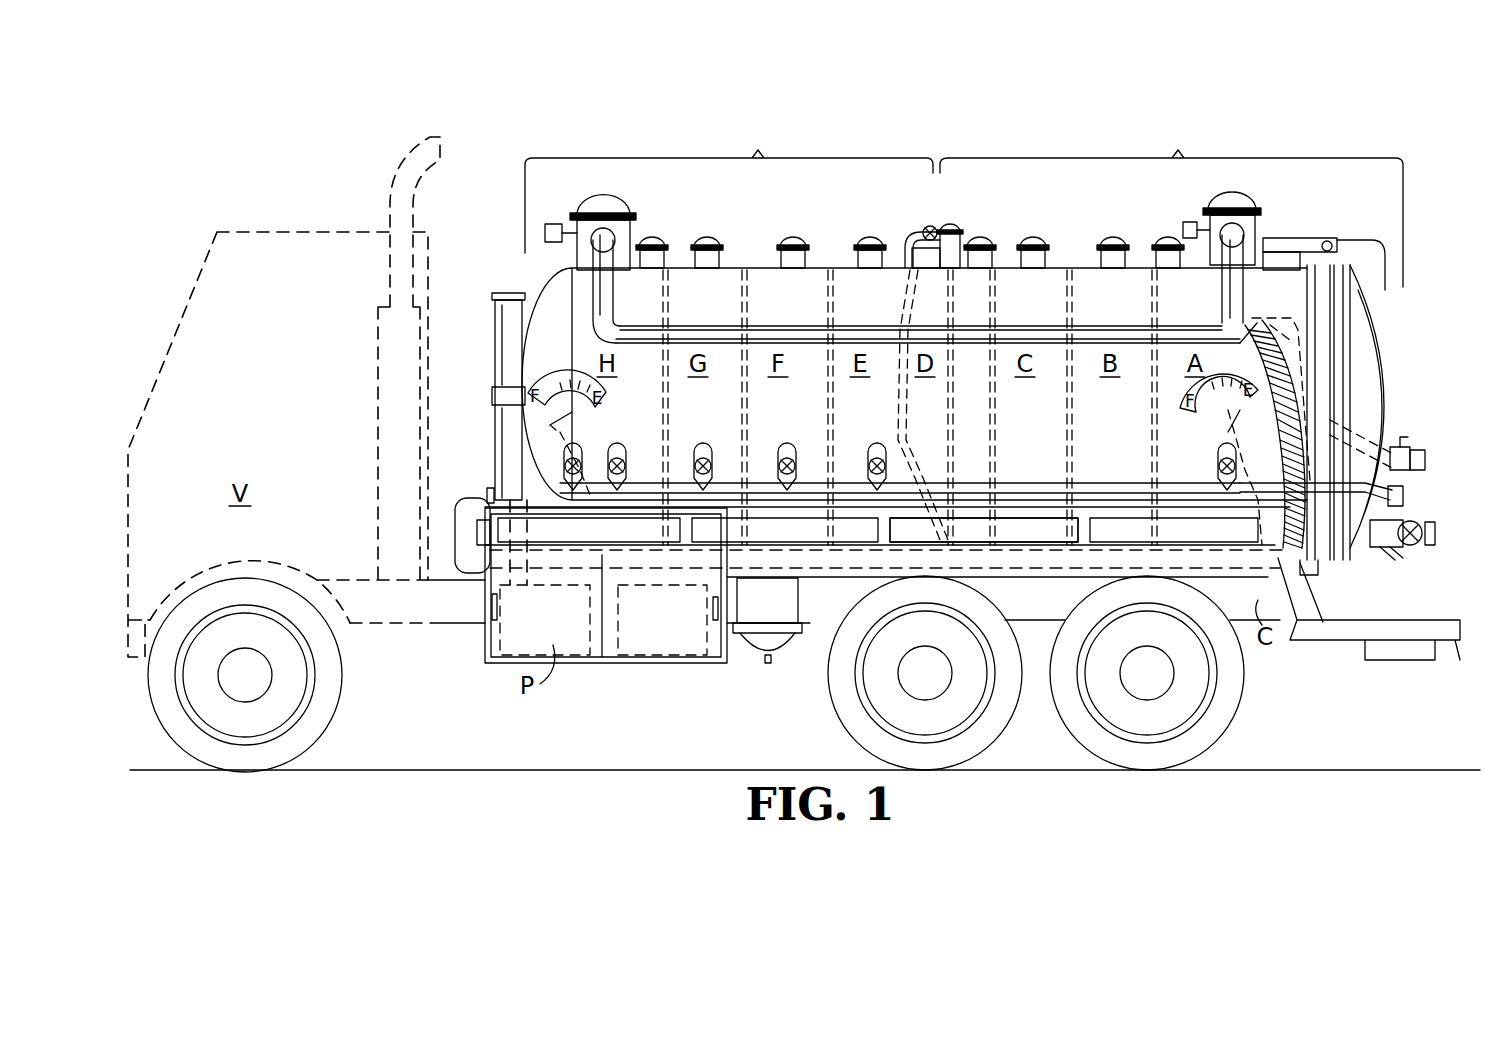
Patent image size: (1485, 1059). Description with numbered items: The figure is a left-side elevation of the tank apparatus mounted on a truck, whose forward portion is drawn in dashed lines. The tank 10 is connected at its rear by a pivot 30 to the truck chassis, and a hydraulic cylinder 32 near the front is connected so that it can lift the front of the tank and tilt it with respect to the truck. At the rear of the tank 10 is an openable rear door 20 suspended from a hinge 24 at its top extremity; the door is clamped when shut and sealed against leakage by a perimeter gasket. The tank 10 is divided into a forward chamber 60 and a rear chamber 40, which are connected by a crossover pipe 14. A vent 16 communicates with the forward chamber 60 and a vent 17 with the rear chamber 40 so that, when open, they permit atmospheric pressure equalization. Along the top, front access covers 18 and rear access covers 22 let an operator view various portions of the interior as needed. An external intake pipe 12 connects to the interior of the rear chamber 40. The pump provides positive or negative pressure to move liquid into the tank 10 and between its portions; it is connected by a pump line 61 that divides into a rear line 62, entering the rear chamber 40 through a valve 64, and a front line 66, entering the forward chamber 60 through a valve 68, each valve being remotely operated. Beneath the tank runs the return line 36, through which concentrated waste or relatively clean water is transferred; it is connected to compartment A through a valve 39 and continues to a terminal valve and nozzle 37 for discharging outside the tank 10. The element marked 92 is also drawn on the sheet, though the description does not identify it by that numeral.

The tank 10 is at (752, 266).
The external intake pipe 12 is at (1405, 445).
The crossover pipe 14 is at (948, 225).
The vent 16 is at (608, 206).
The vent 17 is at (1248, 202).
The front access covers 18 is at (705, 243).
The rear door 20 is at (1393, 340).
The rear access covers 22 is at (1030, 243).
The hinge 24 is at (1322, 240).
The pivot 30 is at (1322, 573).
The hydraulic cylinder 32 is at (497, 430).
The return line 36 is at (758, 483).
The terminal valve and nozzle 37 is at (1410, 505).
The valve 39 is at (1222, 452).
The rear chamber 40 is at (1171, 205).
The forward chamber 60 is at (729, 188).
The pump line 61 is at (1038, 556).
The rear line 62 is at (1222, 295).
The valve 64 is at (1188, 224).
The front line 66 is at (612, 318).
The valve 68 is at (562, 226).
The fill valve 92 is at (924, 232).